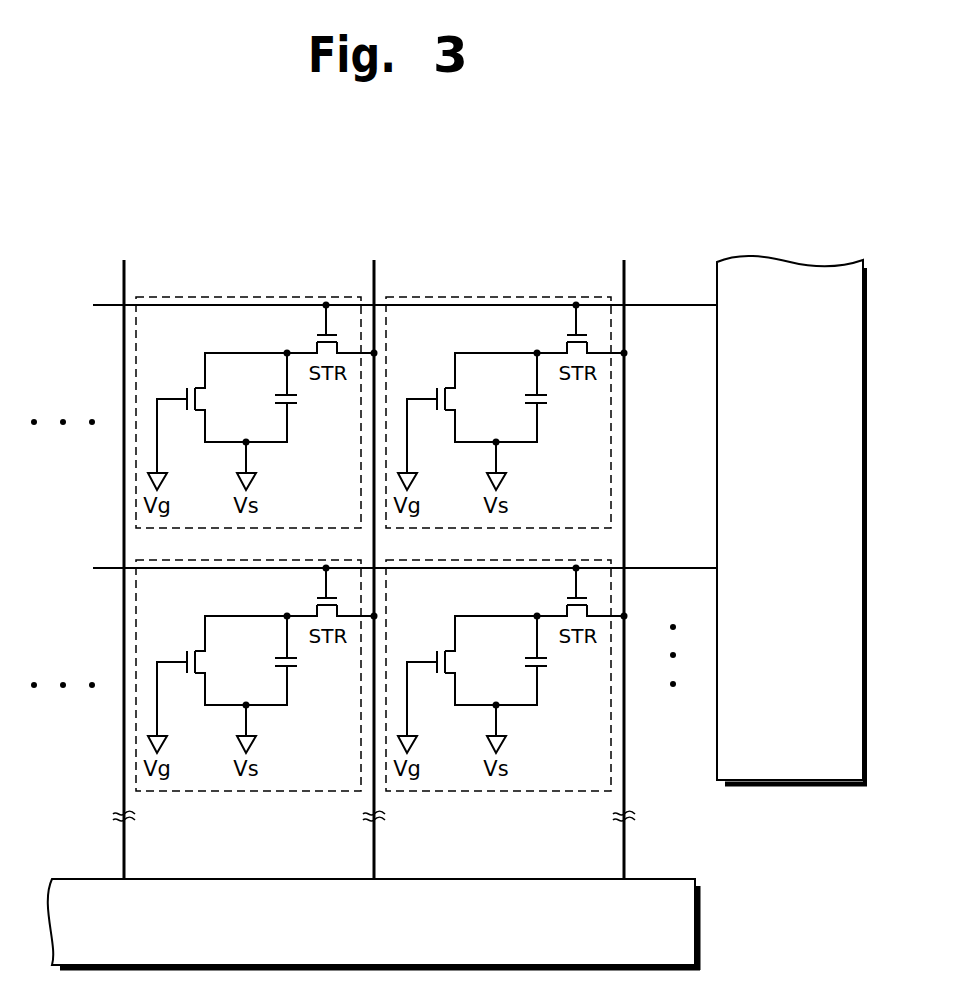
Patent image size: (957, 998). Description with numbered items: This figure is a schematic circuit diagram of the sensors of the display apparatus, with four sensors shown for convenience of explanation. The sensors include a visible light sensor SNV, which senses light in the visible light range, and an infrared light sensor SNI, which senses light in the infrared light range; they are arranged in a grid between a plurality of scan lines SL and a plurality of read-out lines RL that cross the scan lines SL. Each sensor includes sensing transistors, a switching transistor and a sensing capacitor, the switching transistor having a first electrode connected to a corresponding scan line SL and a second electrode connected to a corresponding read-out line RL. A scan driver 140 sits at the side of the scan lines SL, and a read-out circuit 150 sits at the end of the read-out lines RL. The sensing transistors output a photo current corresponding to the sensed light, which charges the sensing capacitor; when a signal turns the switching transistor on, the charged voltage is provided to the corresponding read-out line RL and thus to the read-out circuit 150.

The scan driver 140 is at (792, 786).
The read-out circuit 150 is at (700, 920).
The visible light sensor SNV is at (382, 545).
The infrared light sensor SNI is at (382, 545).
The scan lines SL is at (405, 427).
The read-out lines RL is at (384, 569).